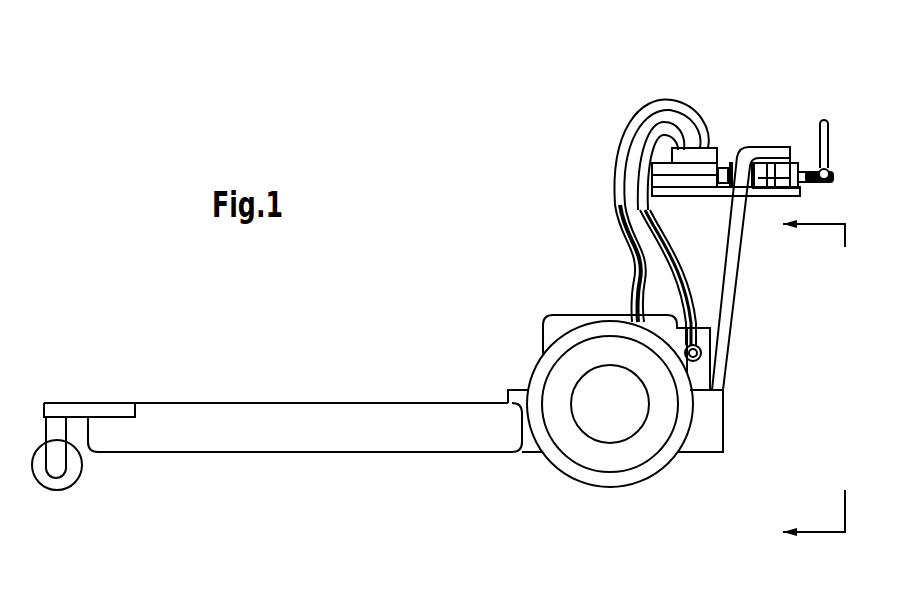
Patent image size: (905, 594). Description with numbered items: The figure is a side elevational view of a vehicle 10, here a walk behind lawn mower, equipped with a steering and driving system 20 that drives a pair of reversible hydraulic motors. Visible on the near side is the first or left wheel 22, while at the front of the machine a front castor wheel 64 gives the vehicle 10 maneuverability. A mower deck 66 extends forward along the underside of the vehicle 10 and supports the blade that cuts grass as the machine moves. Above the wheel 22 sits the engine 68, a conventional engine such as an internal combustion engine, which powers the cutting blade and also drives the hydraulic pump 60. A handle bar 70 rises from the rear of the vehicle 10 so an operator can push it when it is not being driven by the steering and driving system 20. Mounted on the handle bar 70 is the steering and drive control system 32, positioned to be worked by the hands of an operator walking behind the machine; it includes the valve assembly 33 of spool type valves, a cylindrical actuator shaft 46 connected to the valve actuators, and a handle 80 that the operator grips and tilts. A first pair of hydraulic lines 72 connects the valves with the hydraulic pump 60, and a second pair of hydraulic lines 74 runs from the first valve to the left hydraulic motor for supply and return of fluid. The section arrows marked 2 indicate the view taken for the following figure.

The vehicle 10 is at (498, 227).
The steering and driving system 20 is at (562, 188).
The first or left wheel 22 is at (537, 372).
The steering and drive control system 32 is at (718, 93).
The valve assembly 33 is at (725, 142).
The cylindrical actuator shaft 46 is at (815, 160).
The hydraulic pump 60 is at (705, 373).
The front castor wheels 64 is at (70, 478).
The mower deck 66 is at (295, 425).
The engine 68 is at (556, 315).
The handle bar 70 is at (735, 276).
The first pair of hydraulic lines 72 is at (690, 288).
The second pair of hydraulic lines 74 is at (640, 302).
The handle 80 is at (826, 118).
The section line for FIG. 2 is at (805, 379).